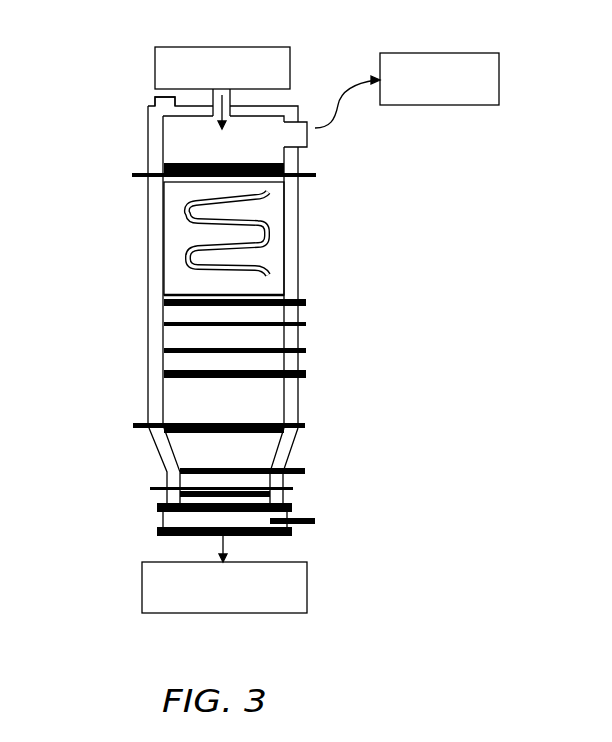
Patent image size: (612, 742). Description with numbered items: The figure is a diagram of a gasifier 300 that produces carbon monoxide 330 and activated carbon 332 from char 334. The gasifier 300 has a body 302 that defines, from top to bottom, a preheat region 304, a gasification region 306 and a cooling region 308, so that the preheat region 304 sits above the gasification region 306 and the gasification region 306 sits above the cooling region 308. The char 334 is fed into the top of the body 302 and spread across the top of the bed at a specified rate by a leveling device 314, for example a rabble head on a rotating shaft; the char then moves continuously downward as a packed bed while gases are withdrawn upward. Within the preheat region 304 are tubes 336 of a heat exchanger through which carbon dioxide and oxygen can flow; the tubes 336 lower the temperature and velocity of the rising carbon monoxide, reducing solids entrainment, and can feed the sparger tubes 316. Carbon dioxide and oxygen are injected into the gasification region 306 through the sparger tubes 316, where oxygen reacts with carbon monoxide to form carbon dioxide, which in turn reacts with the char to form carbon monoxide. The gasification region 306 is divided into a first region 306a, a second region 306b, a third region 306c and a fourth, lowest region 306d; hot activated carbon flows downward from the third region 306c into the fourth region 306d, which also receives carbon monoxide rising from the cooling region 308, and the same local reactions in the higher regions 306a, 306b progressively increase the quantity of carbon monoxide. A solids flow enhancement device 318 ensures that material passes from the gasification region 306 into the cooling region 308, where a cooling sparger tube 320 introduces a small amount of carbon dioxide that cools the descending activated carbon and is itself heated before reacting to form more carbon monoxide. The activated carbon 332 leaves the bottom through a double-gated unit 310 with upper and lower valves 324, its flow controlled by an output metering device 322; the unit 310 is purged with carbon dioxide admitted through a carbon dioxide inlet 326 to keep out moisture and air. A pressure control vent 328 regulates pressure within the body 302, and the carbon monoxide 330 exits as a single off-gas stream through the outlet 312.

The gasifier 300 is at (74, 35).
The body 302 is at (148, 143).
The preheat region 304 is at (78, 180).
The gasification region 306 is at (78, 299).
The first region 306a is at (140, 300).
The second region 306b is at (140, 320).
The third region 306c is at (140, 339).
The fourth region 306d is at (140, 360).
The cooling region 308 is at (78, 383).
The double-gated unit 310 is at (158, 518).
The outlet 312 is at (309, 136).
The leveling device 314 is at (318, 176).
The sparger tubes 316 is at (306, 302).
The solids flow enhancement device 318 is at (306, 425).
The cooling sparger tube 320 is at (306, 471).
The output metering device 322 is at (150, 488).
The valves 324 is at (292, 505).
The carbon dioxide inlet 326 is at (315, 521).
The pressure control vent 328 is at (155, 98).
The carbon monoxide 330 is at (499, 78).
The activated carbon 332 is at (307, 587).
The char 334 is at (224, 46).
The tubes 336 is at (290, 222).